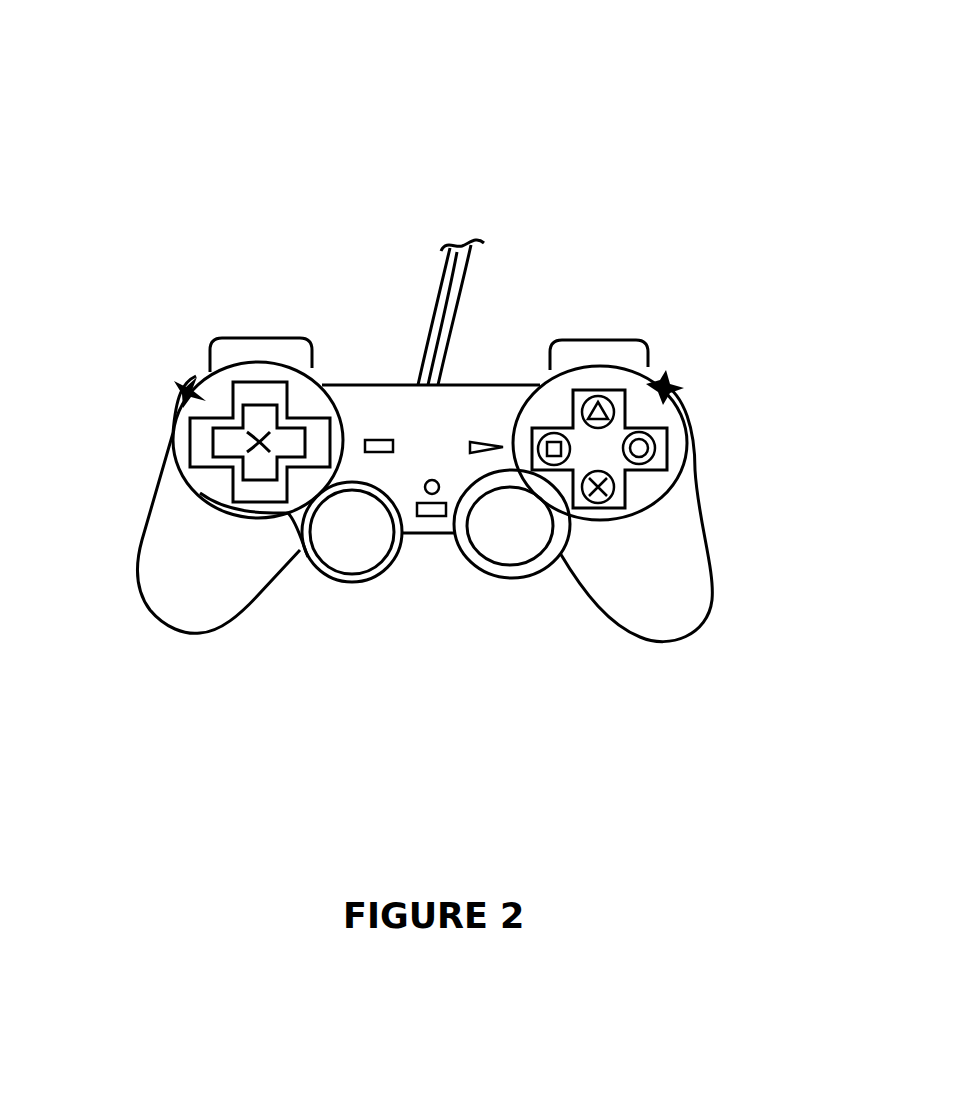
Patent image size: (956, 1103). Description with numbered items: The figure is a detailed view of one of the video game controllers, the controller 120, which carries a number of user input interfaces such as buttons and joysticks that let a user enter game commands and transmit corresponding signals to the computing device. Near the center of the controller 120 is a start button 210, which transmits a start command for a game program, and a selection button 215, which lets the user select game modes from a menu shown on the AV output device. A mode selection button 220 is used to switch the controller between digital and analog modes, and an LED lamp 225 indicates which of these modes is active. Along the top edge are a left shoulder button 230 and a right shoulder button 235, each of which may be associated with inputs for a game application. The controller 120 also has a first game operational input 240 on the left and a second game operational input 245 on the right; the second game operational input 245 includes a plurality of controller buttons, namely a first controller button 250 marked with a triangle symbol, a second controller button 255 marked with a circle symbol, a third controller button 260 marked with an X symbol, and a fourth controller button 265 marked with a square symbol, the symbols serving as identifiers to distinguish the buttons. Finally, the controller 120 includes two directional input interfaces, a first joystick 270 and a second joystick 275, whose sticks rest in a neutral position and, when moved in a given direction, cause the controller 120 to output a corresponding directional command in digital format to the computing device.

The controller 120 is at (503, 142).
The start button 210 is at (479, 438).
The selection button 215 is at (378, 436).
The mode selection button 220 is at (425, 490).
The LED lamp 225 is at (430, 516).
The left shoulder button 230 is at (235, 335).
The right shoulder button 235 is at (610, 338).
The first game operational input 240 is at (182, 389).
The second game operational input 245 is at (668, 387).
The first controller button 250 is at (616, 409).
The second controller button 255 is at (657, 448).
The third controller button 260 is at (617, 497).
The fourth controller button 265 is at (560, 473).
The first joystick 270 is at (312, 562).
The second joystick 275 is at (533, 567).